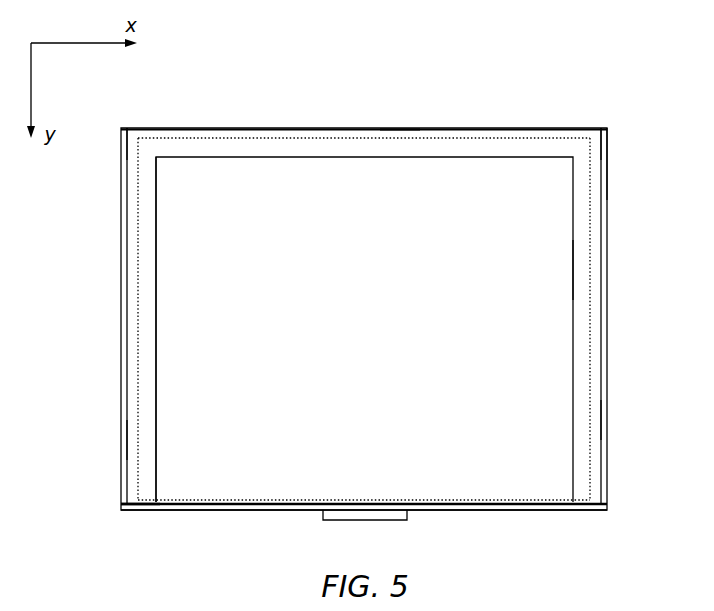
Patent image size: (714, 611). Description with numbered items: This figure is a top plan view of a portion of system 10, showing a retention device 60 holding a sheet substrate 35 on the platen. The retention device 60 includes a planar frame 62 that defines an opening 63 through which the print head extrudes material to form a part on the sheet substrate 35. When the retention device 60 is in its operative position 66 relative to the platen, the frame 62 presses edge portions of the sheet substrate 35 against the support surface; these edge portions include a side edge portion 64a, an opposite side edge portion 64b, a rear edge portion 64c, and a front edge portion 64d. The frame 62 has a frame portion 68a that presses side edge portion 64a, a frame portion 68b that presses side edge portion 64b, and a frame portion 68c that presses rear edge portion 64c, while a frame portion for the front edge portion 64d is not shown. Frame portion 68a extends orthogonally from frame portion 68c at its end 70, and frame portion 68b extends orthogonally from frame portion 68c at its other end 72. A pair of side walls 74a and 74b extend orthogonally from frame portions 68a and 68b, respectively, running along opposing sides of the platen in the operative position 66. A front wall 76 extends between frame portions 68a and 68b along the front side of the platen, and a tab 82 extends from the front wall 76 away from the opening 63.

The system 10 is at (629, 76).
The sheet substrate 35 is at (182, 265).
The retention device 60 is at (607, 477).
The frame 62 is at (582, 286).
The opening 63 is at (528, 267).
The side edge portion 64a is at (147, 318).
The side edge portion 64b is at (581, 395).
The rear edge portion 64c is at (295, 148).
The front edge portion 64d is at (252, 493).
The operative position 66 is at (90, 528).
The frame portion 68a is at (133, 438).
The frame portion 68b is at (595, 422).
The frame portion 68c is at (402, 147).
The end 70 is at (141, 133).
The end 72 is at (586, 133).
The side wall 74a is at (123, 374).
The side wall 74b is at (606, 328).
The front wall 76 is at (538, 510).
The tab 82 is at (391, 518).